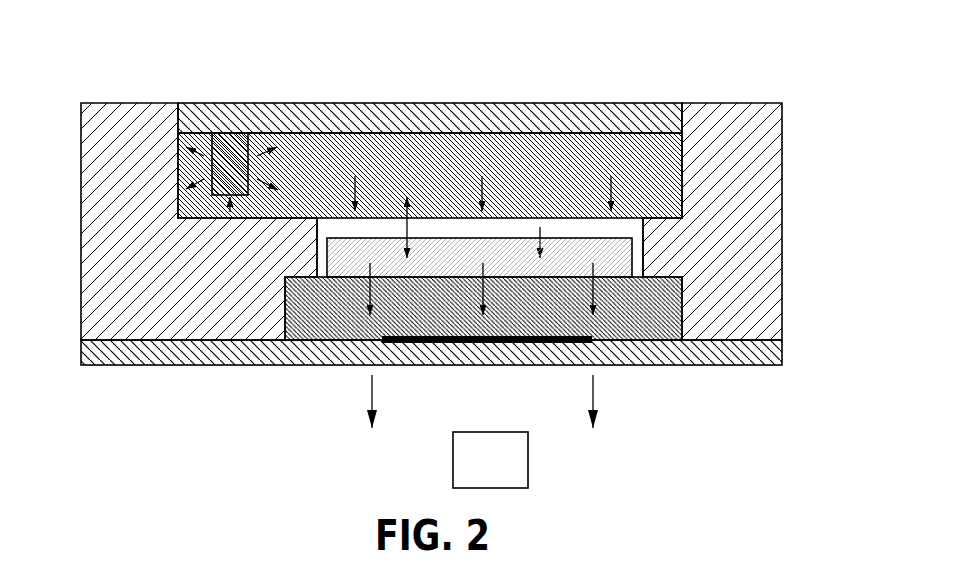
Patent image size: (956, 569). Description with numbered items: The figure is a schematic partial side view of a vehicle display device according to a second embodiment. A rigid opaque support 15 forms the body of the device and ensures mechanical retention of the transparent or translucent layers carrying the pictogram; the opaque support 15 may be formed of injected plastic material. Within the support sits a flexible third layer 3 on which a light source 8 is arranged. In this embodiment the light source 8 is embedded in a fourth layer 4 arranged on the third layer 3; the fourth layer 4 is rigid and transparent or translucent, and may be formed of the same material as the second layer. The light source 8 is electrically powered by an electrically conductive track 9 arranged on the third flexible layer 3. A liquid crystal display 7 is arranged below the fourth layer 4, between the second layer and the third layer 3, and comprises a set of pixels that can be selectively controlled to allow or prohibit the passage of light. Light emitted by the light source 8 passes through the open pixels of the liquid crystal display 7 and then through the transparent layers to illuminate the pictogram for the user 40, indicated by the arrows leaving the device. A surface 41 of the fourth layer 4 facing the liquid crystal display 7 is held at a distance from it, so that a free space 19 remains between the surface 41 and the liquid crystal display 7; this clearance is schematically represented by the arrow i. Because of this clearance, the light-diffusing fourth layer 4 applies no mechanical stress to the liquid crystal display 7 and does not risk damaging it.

The third layer 3 is at (612, 125).
The fourth layer 4 is at (618, 185).
The liquid crystal display 7 is at (605, 255).
The light source 8 is at (230, 162).
The electrically conductive track 9 is at (293, 133).
The opaque support 15 is at (248, 305).
The free space 19 is at (598, 227).
The user 40 is at (490, 460).
The surface 41 is at (364, 222).
The arrow i is at (407, 237).